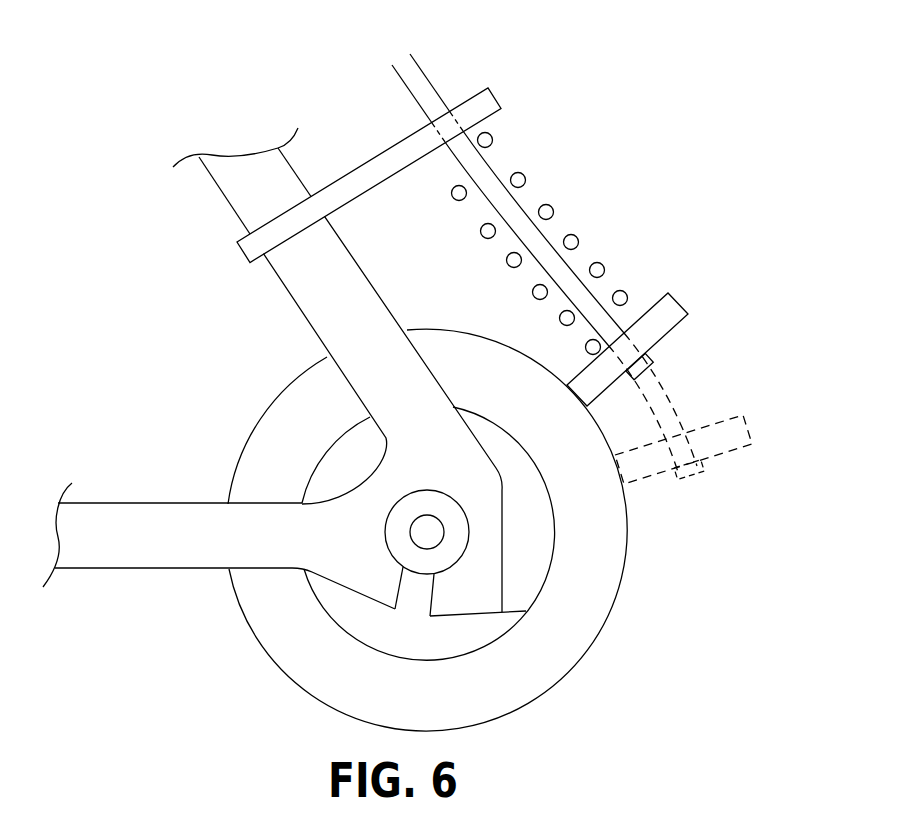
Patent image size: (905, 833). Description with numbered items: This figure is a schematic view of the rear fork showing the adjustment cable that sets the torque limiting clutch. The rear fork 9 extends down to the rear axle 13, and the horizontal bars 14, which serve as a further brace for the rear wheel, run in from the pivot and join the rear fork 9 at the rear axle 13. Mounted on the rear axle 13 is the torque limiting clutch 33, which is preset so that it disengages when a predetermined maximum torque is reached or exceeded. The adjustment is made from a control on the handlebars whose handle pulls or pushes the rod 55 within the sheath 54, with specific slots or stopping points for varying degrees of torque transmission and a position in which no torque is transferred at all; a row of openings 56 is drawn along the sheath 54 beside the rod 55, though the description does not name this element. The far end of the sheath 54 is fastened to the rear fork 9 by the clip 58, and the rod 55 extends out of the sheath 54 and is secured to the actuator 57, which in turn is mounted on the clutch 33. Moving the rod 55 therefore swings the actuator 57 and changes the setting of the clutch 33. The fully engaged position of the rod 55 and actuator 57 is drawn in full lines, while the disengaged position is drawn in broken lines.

The rear fork 9 is at (242, 190).
The rear axle 13 is at (421, 523).
The horizontal bars 14 is at (135, 557).
The torque limiting clutch 33 is at (666, 602).
The sheath 54 is at (430, 80).
The rod 55 is at (540, 248).
The holes in strip 56 is at (494, 141).
The actuator 57 is at (668, 317).
The clip 58 is at (376, 169).